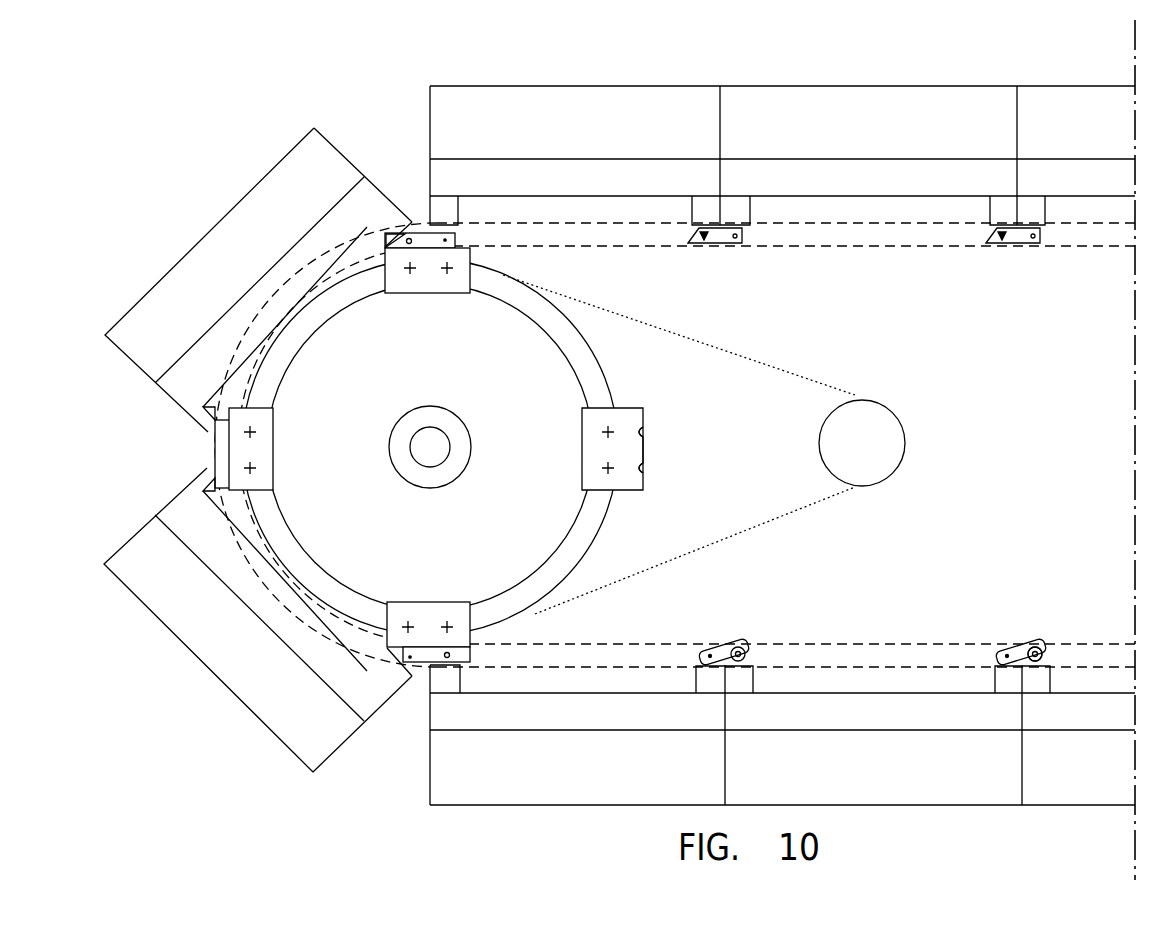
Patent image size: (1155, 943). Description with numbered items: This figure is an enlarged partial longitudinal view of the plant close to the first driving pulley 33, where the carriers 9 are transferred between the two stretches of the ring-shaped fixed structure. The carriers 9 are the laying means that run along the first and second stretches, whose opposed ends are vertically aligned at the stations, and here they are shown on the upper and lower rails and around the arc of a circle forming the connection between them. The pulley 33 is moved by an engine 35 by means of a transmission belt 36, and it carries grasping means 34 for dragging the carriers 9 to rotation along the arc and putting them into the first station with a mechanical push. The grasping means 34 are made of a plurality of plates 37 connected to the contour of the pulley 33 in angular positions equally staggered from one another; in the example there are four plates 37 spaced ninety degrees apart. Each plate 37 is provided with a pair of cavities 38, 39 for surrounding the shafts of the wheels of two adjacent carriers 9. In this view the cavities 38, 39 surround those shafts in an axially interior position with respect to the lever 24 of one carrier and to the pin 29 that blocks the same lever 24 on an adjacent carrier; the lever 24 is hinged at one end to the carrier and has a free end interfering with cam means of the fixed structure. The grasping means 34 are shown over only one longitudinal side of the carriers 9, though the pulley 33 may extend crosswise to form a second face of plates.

The carrier 9 is at (232, 227).
The lever 24 is at (1013, 244).
The pin 29 is at (1050, 643).
The driving pulley 33 is at (520, 390).
The grasping means 34 is at (672, 461).
The engine 35 is at (878, 438).
The transmission belt 36 is at (790, 514).
The plate 37 is at (427, 282).
The cavity 38 is at (634, 432).
The cavity 39 is at (640, 468).